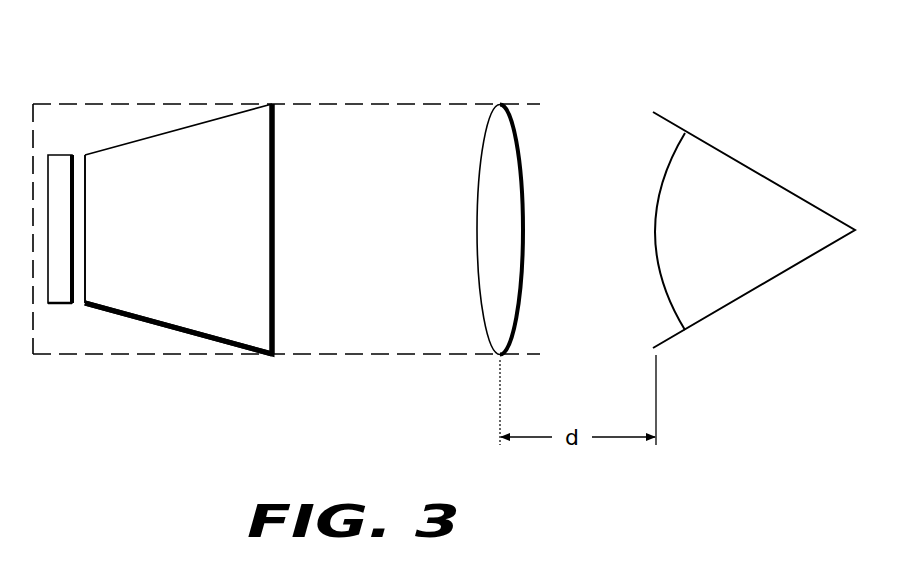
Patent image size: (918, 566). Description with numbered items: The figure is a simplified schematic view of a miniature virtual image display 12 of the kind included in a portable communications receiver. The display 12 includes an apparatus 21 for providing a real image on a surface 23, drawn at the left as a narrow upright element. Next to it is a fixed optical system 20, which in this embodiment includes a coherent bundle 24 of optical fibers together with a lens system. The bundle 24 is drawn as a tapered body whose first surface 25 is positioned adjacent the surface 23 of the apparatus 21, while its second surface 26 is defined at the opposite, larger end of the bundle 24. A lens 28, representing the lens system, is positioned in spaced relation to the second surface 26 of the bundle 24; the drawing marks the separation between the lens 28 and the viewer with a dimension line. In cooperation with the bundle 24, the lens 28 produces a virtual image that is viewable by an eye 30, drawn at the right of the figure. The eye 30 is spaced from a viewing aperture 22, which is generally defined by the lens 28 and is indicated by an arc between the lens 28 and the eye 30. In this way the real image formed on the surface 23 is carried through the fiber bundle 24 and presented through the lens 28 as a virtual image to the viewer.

The miniature virtual image display 12 is at (136, 451).
The fixed optical system 20 is at (278, 90).
The apparatus for providing a real image 21 is at (62, 305).
The viewing aperture 22 is at (590, 180).
The surface 23 is at (70, 155).
The coherent bundle of optical fibers 24 is at (240, 325).
The first surface 25 is at (85, 215).
The second surface 26 is at (277, 352).
The lens 28 is at (500, 105).
The eye 30 is at (762, 290).